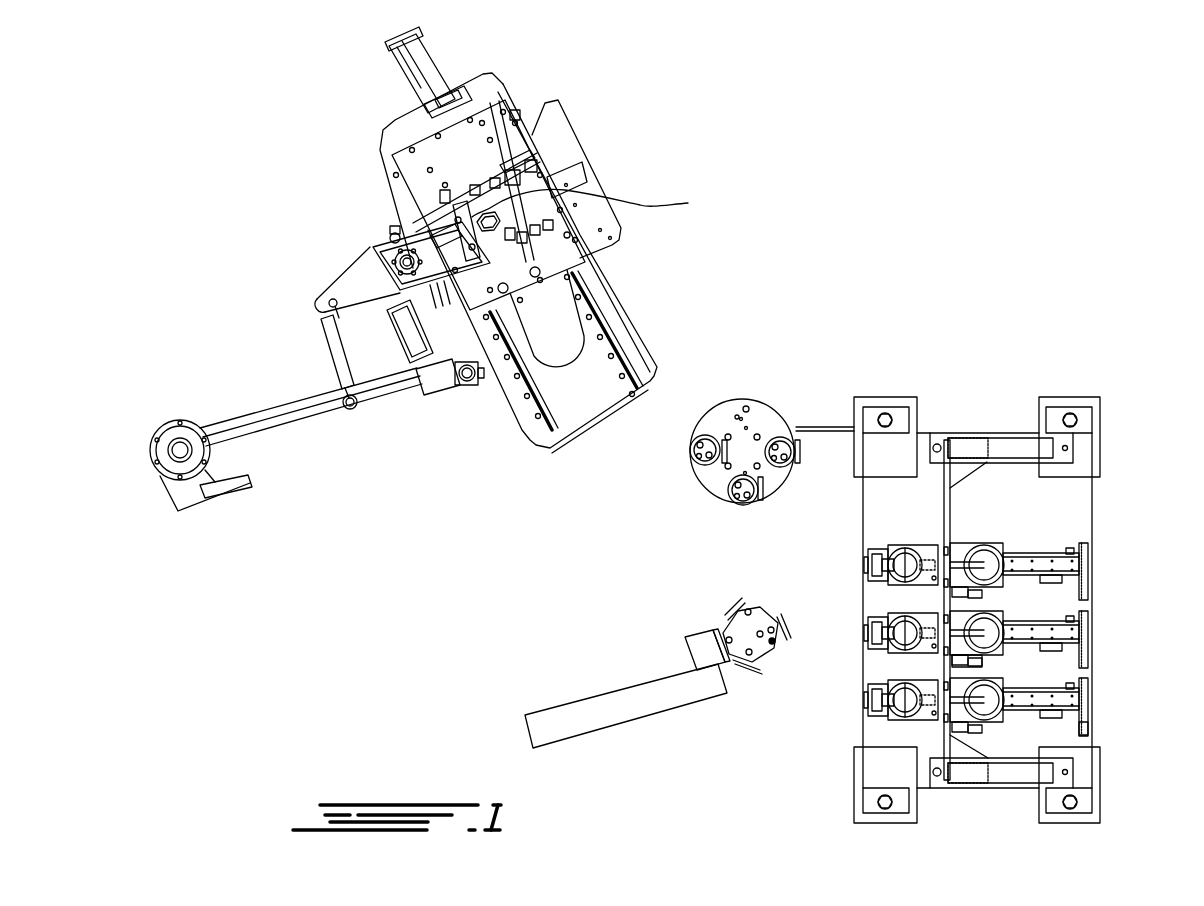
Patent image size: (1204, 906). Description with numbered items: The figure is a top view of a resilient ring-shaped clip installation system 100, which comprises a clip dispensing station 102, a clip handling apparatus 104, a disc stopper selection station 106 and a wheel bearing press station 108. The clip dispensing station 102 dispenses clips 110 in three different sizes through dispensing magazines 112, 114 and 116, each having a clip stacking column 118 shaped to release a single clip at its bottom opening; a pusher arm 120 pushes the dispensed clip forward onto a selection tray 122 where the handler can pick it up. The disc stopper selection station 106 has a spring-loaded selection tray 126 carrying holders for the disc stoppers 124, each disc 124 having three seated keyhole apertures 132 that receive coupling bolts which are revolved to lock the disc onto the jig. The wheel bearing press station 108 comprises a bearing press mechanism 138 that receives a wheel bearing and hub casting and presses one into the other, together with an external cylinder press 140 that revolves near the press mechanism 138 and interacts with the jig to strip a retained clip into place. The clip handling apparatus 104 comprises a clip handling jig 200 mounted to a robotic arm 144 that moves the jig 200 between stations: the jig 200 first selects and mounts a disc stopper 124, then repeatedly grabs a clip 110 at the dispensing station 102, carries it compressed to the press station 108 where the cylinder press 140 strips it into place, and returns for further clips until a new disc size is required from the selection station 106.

The resilient ring-shaped clip installation system 100 is at (968, 178).
The clip dispensing station 102 is at (1038, 376).
The clip handling apparatus 104 is at (638, 648).
The disc stopper selection station 106 is at (755, 374).
The wheel bearing press station 108 is at (283, 168).
The clip 110 is at (905, 545).
The dispensing magazine 112 is at (1000, 548).
The dispensing magazine 114 is at (1000, 667).
The dispensing magazine 116 is at (1062, 688).
The clip stacking column 118 is at (1000, 740).
The pusher arm 120 is at (1040, 630).
The selection tray 122 is at (920, 617).
The disc stopper 124 is at (703, 437).
The spring-loaded selection tray 126 is at (700, 492).
The keyhole aperture 132 is at (790, 488).
The bearing press mechanism 138 is at (599, 202).
The external cylinder press 140 is at (472, 388).
The robotic arm 144 is at (628, 710).
The clip handling jig 200 is at (752, 620).